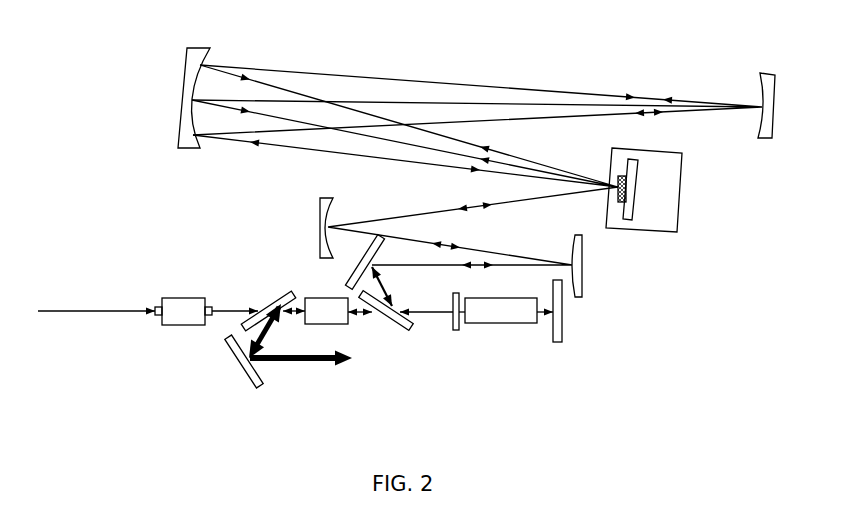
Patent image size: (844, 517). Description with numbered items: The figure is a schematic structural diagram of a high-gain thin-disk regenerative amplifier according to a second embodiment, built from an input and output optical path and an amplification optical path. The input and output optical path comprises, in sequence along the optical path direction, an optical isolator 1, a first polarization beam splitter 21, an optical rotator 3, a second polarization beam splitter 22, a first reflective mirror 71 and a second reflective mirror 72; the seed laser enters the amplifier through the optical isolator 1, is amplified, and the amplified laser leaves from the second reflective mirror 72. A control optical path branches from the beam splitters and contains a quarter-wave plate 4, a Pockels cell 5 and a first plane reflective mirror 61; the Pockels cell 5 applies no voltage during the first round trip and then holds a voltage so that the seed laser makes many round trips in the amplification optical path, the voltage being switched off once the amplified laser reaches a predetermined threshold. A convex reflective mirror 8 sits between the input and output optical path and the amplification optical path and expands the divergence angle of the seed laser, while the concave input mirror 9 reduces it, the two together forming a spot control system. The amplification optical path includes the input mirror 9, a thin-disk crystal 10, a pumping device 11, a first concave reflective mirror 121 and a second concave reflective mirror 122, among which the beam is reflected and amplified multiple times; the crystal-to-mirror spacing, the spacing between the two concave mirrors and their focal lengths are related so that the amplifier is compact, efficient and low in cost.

The optical isolator 1 is at (183, 298).
The first polarization beam splitter 21 is at (268, 300).
The second polarization beam splitter 22 is at (385, 327).
The optical rotator 3 is at (327, 324).
The quarter-wave plate 4 is at (457, 330).
The Pockels cell 5 is at (500, 323).
The first plane reflective mirror 61 is at (558, 342).
The first reflective mirror 71 is at (347, 275).
The second reflective mirror 72 is at (245, 380).
The convex reflective mirror 8 is at (578, 297).
The input mirror 9 is at (325, 198).
The thin-disk crystal 10 is at (622, 220).
The pumping device 11 is at (664, 232).
The first concave reflective mirror 121 is at (193, 48).
The second concave reflective mirror 122 is at (767, 73).